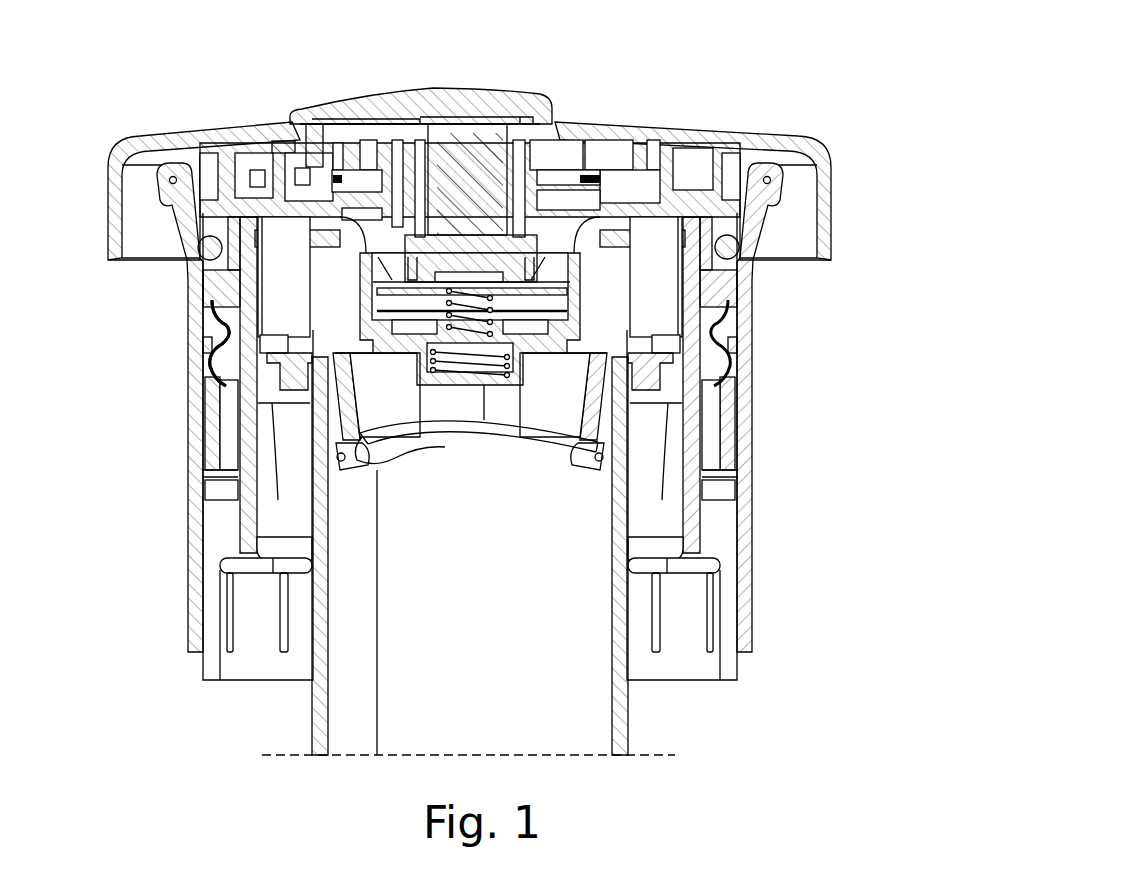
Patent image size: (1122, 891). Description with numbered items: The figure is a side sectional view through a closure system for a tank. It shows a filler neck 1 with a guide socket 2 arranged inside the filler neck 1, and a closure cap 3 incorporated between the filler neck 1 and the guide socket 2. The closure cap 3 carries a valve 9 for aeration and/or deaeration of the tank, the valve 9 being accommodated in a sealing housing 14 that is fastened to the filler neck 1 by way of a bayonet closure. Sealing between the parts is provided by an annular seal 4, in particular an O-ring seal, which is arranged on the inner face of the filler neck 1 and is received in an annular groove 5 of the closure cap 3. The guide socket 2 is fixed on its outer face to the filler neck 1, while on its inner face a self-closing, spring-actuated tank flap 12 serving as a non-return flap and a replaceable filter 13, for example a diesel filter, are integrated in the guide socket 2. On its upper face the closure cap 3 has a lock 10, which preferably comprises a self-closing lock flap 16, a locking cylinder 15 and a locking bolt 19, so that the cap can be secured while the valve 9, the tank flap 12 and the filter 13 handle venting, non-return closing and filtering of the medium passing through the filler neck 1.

The filler neck 1 is at (182, 298).
The guide socket 2 is at (252, 365).
The closure cap 3 is at (825, 212).
The annular seal 4 is at (197, 254).
The annular groove 5 is at (727, 265).
The valve 9 is at (377, 319).
The lock 10 is at (373, 105).
The tank flap 12 is at (437, 433).
The filter 13 is at (522, 667).
The sealing housing 14 is at (218, 302).
The locking cylinder 15 is at (477, 187).
The lock flap 16 is at (508, 105).
The locking bolt 19 is at (582, 177).